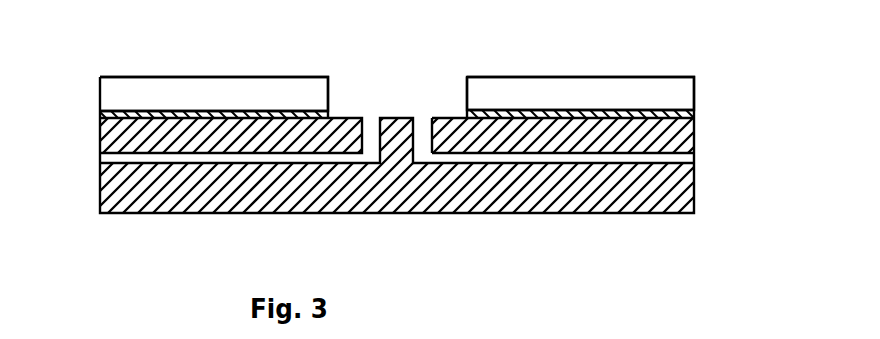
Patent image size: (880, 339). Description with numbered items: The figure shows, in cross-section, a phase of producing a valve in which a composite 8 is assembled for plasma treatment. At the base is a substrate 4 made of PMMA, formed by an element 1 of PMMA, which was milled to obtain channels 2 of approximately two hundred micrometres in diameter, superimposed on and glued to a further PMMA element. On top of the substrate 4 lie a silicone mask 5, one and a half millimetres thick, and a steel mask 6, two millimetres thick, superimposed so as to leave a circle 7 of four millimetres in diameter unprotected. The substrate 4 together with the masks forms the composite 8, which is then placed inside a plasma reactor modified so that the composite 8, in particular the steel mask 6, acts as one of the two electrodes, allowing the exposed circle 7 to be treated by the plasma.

The element of PMMA 1 is at (695, 132).
The channels 2 is at (513, 204).
The substrate 4 is at (90, 138).
The silicone mask 5 is at (328, 110).
The steel mask 6 is at (515, 90).
The circle 7 is at (461, 111).
The composite 8 is at (603, 55).